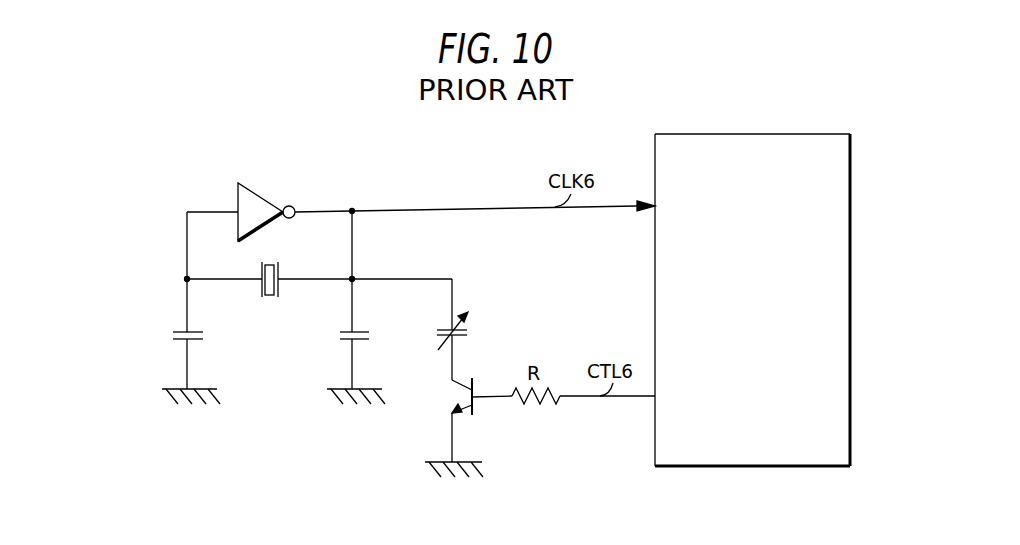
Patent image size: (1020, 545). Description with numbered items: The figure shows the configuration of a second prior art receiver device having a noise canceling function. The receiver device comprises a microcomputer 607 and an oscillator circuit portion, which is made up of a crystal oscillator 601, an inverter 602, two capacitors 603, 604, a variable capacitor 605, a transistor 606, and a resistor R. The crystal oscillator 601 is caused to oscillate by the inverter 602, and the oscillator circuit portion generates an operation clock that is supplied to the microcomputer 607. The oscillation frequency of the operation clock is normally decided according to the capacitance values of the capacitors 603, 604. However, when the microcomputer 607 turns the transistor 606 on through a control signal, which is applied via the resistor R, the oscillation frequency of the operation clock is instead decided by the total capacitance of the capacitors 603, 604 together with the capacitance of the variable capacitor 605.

The crystal oscillator 601 is at (280, 273).
The inverter 602 is at (265, 173).
The capacitor 603 is at (176, 331).
The capacitor 604 is at (342, 331).
The variable capacitor 605 is at (445, 328).
The transistor 606 is at (455, 380).
The microcomputer 607 is at (745, 134).